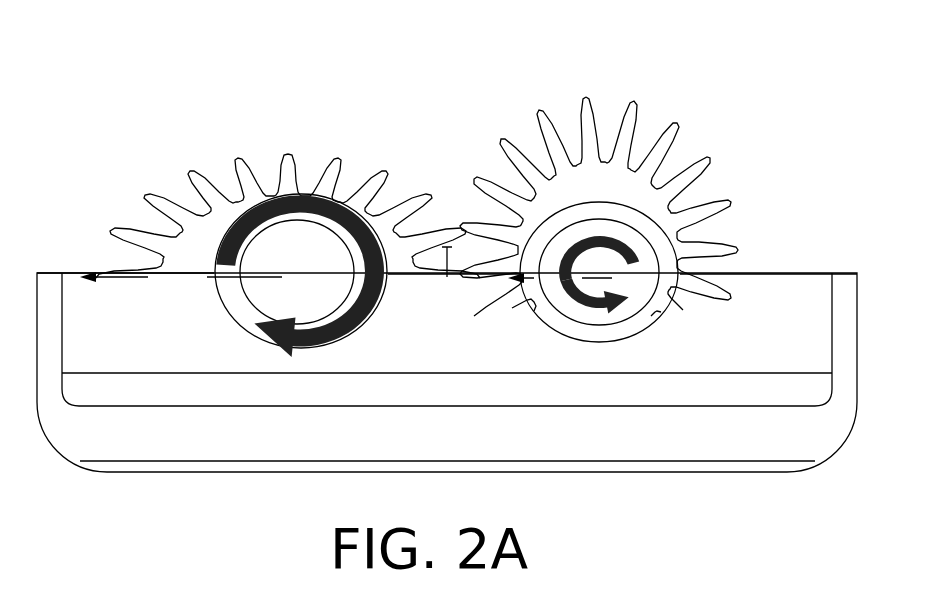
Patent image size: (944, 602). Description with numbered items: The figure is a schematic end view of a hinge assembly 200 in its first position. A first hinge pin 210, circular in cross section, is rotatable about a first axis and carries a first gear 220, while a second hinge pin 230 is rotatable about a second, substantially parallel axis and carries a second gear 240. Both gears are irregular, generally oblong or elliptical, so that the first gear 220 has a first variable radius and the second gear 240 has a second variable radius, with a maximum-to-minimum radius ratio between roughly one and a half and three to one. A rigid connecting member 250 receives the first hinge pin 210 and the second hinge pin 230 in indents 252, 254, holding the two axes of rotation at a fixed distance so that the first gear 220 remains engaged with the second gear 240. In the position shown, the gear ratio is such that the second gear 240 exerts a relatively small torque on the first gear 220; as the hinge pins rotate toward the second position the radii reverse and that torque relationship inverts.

The hinge assembly 200 is at (78, 109).
The first hinge pin 210 is at (281, 294).
The first gear 220 is at (214, 152).
The second hinge pin 230 is at (568, 311).
The second gear 240 is at (532, 72).
The connecting member 250 is at (836, 268).
The indent 252 is at (216, 291).
The indent 254 is at (518, 309).